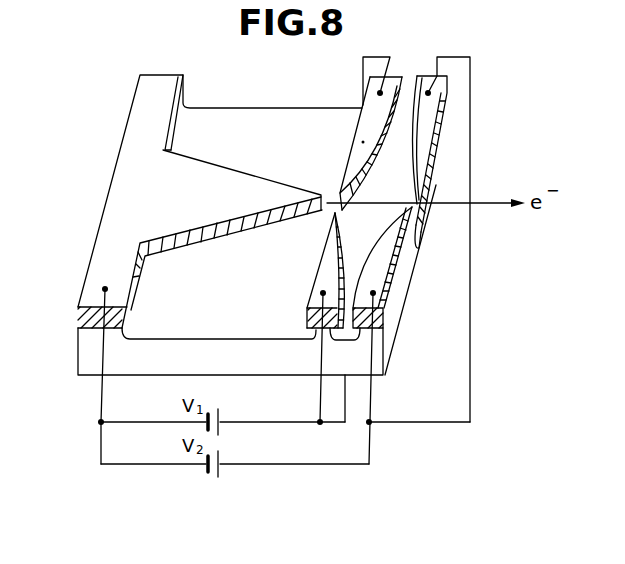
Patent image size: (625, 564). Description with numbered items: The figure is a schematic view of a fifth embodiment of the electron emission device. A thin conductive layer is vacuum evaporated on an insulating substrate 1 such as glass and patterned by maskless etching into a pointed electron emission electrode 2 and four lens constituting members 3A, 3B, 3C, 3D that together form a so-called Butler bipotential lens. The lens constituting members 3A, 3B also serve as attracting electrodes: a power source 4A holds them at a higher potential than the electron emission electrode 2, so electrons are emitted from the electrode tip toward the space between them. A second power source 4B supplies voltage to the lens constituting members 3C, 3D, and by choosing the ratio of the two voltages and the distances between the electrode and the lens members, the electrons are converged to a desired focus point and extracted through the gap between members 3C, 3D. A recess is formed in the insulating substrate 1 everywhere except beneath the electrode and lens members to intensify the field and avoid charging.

The insulating substrate 1 is at (140, 379).
The electron emission electrode 2 is at (122, 223).
The lens constituting member 3A is at (330, 256).
The lens constituting member 3B is at (372, 112).
The lens constituting member 3C is at (377, 281).
The lens constituting member 3D is at (417, 118).
The power source 4A is at (221, 430).
The power source 4B is at (221, 468).